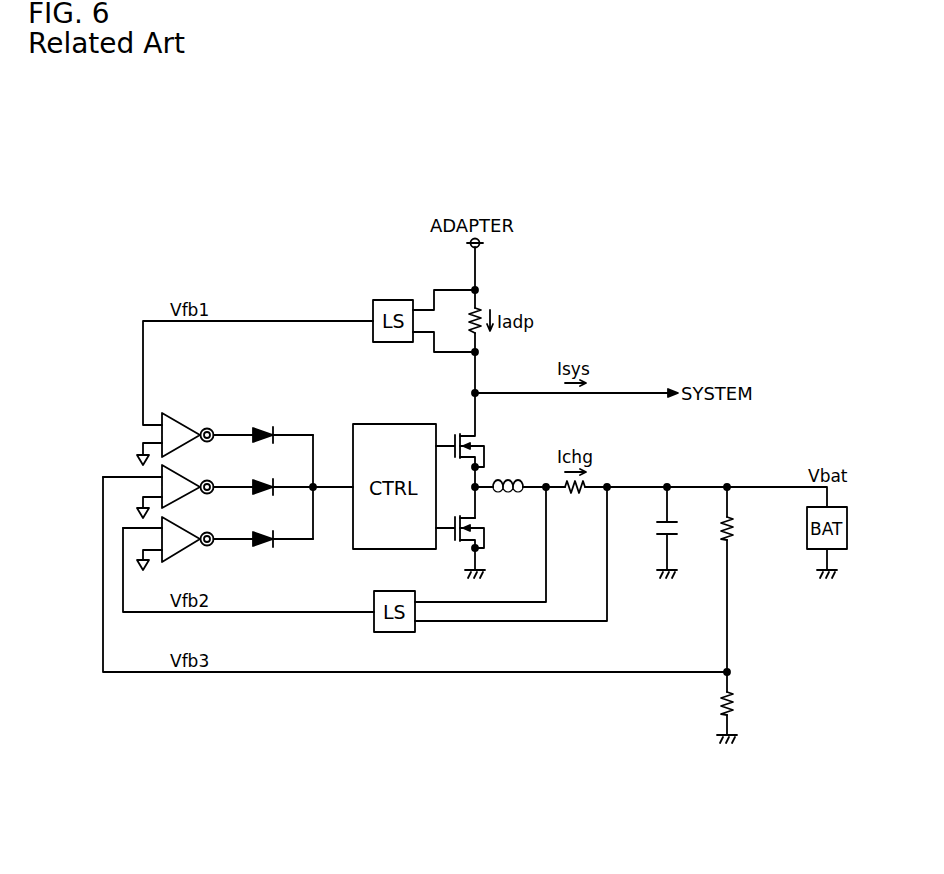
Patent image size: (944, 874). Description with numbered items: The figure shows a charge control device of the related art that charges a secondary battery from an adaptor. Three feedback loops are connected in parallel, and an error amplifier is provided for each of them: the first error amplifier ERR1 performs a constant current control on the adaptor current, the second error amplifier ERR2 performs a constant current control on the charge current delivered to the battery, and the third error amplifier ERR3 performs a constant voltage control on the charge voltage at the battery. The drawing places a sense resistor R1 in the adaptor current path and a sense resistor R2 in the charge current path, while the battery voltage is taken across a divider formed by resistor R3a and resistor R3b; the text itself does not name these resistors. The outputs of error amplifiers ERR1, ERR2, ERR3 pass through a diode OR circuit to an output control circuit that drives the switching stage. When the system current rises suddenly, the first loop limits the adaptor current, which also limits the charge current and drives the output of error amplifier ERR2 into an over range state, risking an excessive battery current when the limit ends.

The adapter current sense resistor R1 is at (482, 307).
The charge current sense resistor R2 is at (575, 498).
The battery voltage divider resistor (upper) R3a is at (753, 514).
The battery voltage divider resistor (lower) R3b is at (753, 703).
The first error amplifier ERR1 is at (187, 424).
The second error amplifier ERR2 is at (187, 527).
The third error amplifier ERR3 is at (187, 474).